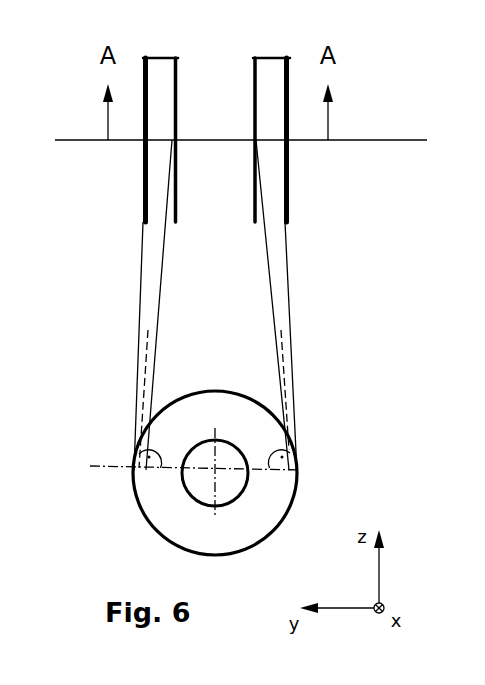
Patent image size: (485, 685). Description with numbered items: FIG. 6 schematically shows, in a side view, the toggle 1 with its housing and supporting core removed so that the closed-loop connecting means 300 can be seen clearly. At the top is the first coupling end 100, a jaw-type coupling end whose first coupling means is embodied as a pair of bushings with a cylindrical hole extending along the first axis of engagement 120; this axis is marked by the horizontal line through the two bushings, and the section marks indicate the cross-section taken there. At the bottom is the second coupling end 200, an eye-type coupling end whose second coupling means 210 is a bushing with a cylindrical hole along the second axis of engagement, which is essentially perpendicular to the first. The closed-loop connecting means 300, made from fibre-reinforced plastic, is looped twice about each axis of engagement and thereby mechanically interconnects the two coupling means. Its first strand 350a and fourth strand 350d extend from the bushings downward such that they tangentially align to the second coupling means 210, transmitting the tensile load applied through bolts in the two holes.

The toggle 1 is at (246, 306).
The first axis of engagement 120 is at (247, 158).
The first coupling end 100 is at (291, 144).
The closed-loop connecting means 300 is at (326, 277).
The first strand 350a is at (107, 305).
The fourth strand 350d is at (352, 306).
The second coupling end 200 is at (263, 465).
The second coupling means 210 is at (285, 473).